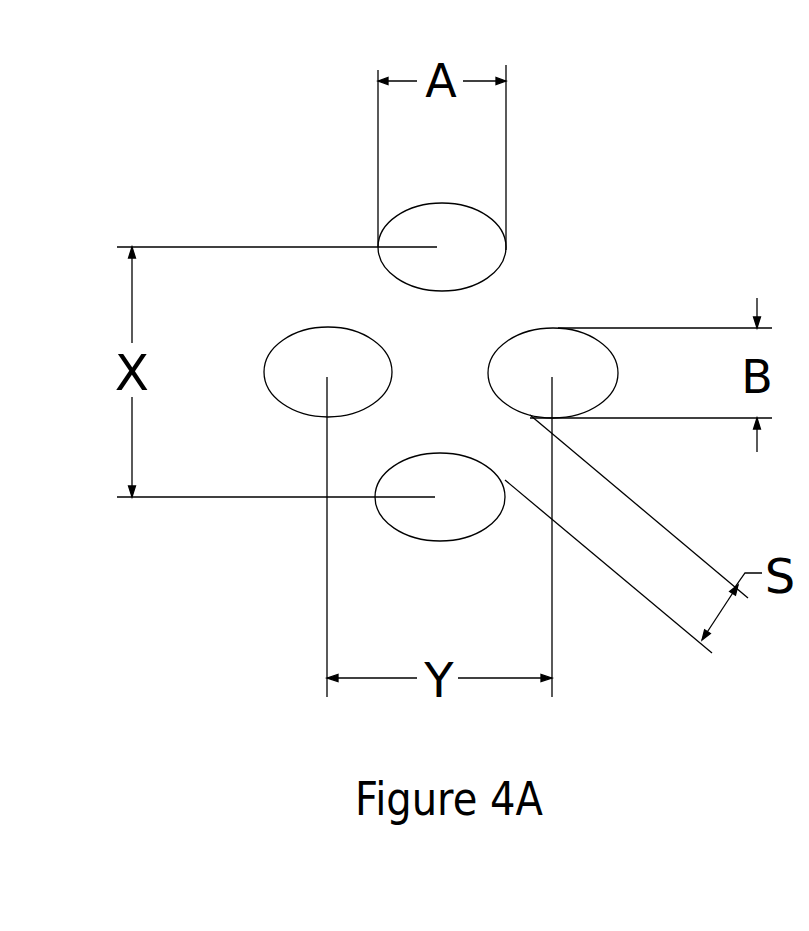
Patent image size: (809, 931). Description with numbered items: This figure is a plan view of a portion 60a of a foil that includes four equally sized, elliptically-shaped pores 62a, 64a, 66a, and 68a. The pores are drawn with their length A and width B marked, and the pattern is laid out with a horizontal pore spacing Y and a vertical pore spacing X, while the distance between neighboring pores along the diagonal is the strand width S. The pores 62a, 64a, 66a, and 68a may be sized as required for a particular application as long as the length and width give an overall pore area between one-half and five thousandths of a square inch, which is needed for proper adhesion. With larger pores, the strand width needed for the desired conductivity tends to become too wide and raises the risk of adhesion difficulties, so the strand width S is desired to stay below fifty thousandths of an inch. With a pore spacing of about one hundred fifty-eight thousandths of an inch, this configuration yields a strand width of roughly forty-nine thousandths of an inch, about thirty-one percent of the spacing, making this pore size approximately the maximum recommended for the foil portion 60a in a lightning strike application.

The portion of a foil 60a is at (438, 318).
The elliptically-shaped pore 62a is at (508, 244).
The elliptically-shaped pore 64a is at (584, 341).
The elliptically-shaped pore 66a is at (440, 527).
The elliptically-shaped pore 68a is at (282, 372).